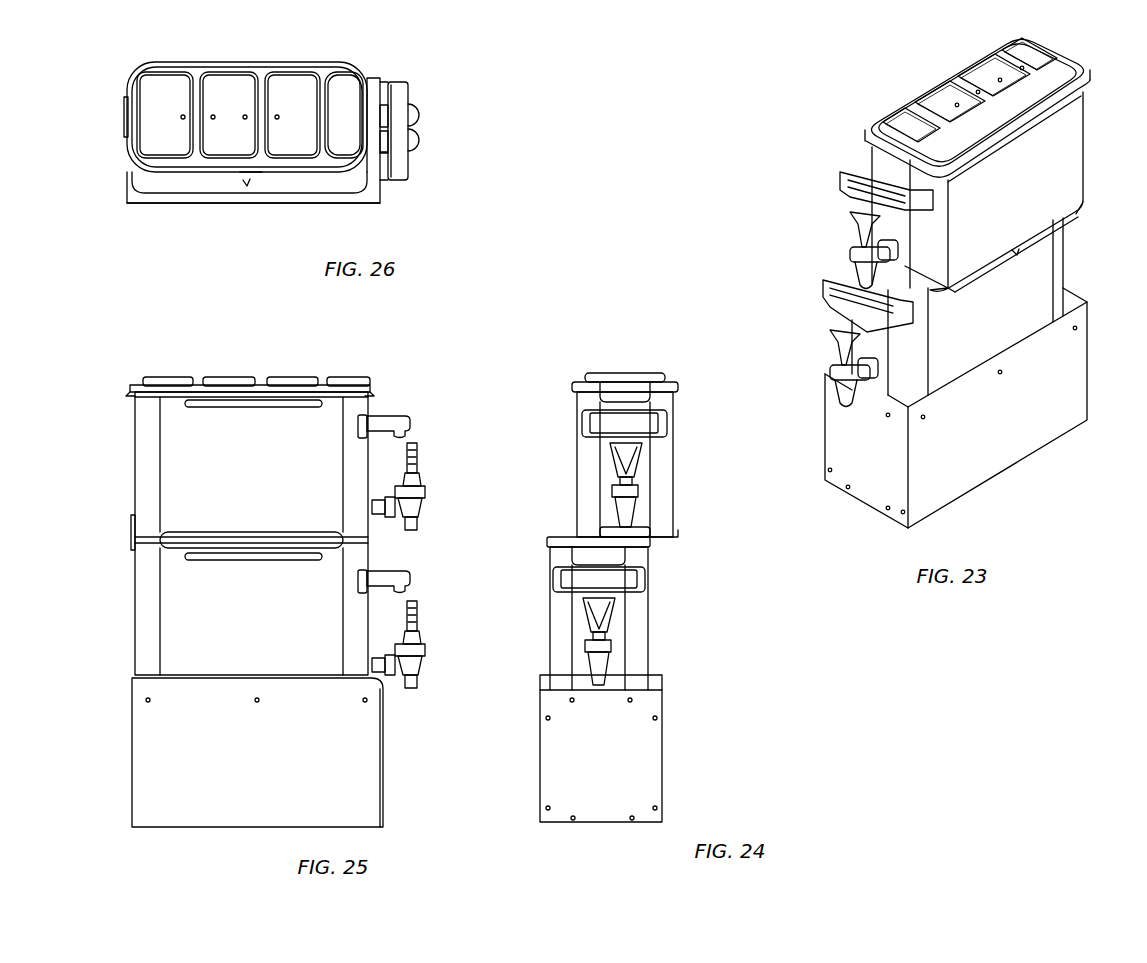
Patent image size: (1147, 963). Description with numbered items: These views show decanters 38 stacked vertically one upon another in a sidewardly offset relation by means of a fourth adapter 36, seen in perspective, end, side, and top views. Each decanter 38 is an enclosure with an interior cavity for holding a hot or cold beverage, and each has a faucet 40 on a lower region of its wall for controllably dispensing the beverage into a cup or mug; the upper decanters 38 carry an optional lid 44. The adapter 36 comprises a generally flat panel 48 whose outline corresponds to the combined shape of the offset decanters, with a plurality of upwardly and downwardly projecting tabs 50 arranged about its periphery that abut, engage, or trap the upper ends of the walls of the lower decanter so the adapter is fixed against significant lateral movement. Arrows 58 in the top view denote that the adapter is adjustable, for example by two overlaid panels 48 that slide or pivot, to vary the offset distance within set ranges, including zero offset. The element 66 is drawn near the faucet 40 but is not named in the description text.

In FIG. 26, the container base rim 36 is at (368, 205).
In FIG. 25, the container base rim 36 is at (135, 618).
In FIG. 24, the container base rim 36 is at (677, 540).
In FIG. 23, the container base rim 36 is at (1015, 254).
In FIG. 26, the beverage container 38 is at (372, 62).
In FIG. 25, the beverage container 38 is at (135, 468).
In FIG. 24, the beverage container 38 is at (683, 471).
In FIG. 23, the beverage container 38 is at (1085, 143).
In FIG. 26, the faucet 40 is at (423, 108).
In FIG. 25, the faucet 40 is at (427, 488).
In FIG. 24, the faucet 40 is at (640, 490).
In FIG. 23, the faucet 40 is at (845, 267).
In FIG. 26, the lid 44 is at (285, 172).
In FIG. 25, the lid 44 is at (313, 380).
In FIG. 24, the lid 44 is at (642, 373).
In FIG. 23, the lid 44 is at (888, 122).
In FIG. 26, the container body 48 is at (167, 187).
In FIG. 26, the handle 50 is at (242, 60).
In FIG. 25, the handle 50 is at (132, 520).
In FIG. 24, the handle 50 is at (572, 532).
In FIG. 23, the handle 50 is at (990, 262).
In FIG. 26, the lid seam 58 is at (247, 178).
In FIG. 24, the faucet spout 66 is at (615, 502).